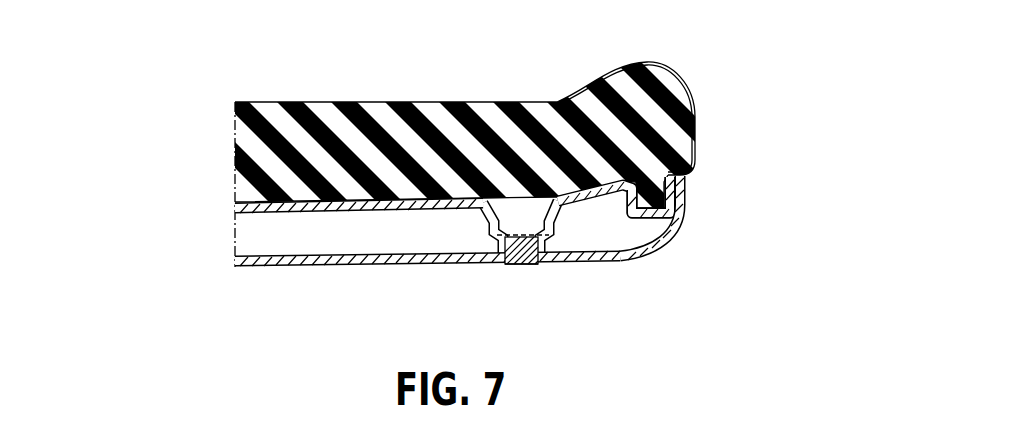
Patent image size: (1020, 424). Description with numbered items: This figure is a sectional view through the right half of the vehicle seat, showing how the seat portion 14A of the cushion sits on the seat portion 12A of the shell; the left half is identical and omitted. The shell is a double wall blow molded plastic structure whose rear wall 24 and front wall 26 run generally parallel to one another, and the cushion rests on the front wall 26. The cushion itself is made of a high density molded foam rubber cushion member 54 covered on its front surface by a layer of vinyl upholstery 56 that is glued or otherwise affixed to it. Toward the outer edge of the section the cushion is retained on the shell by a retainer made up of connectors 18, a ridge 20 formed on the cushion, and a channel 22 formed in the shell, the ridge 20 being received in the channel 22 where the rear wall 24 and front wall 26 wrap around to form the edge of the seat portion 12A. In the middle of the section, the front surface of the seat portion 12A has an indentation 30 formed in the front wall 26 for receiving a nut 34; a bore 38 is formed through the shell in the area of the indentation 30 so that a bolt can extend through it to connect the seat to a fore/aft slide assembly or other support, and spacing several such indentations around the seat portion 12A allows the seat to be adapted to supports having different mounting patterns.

The seat portion 12A is at (433, 173).
The seat portion 14A is at (456, 133).
The connectors 18 is at (677, 199).
The ridge 20 is at (764, 32).
The channel 22 is at (660, 217).
The rear wall 24 is at (233, 257).
The front wall 26 is at (235, 212).
The indentation 30 is at (495, 197).
The nut 34 is at (530, 262).
The bore 38 is at (562, 296).
The cushion member 54 is at (235, 156).
The vinyl upholstery 56 is at (237, 99).